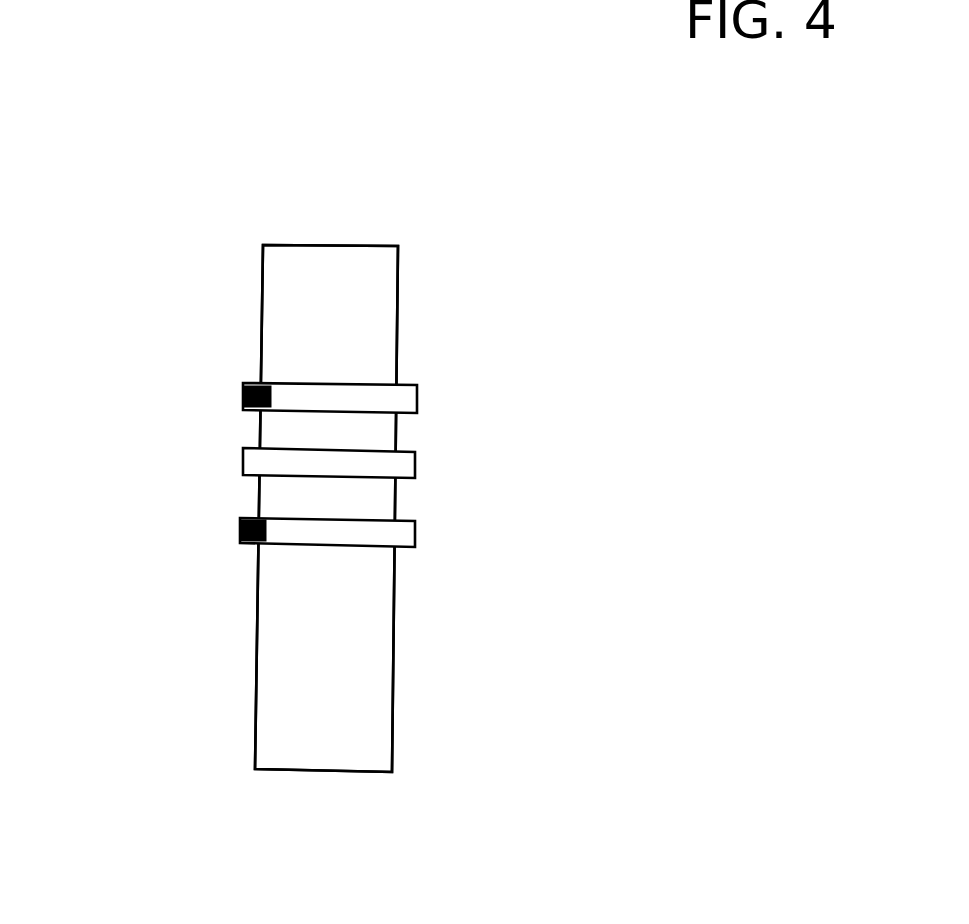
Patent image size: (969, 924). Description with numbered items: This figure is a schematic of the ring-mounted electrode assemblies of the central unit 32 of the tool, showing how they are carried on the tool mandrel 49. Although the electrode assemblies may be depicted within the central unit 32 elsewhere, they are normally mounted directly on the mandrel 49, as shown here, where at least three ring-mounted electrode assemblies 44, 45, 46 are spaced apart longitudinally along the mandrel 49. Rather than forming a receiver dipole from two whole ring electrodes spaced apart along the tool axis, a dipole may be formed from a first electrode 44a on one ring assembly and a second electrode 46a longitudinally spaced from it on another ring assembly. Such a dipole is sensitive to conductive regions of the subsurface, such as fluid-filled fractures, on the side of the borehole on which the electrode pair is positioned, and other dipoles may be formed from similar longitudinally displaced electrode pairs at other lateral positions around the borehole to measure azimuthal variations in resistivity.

The central unit 32 is at (463, 210).
The mandrel 49 is at (287, 305).
The ring-mounted electrode assembly 44 is at (385, 393).
The electrode 44a is at (243, 390).
The ring-mounted electrode assembly 45 is at (405, 465).
The ring-mounted electrode assembly 46 is at (370, 527).
The electrode 46a is at (240, 528).